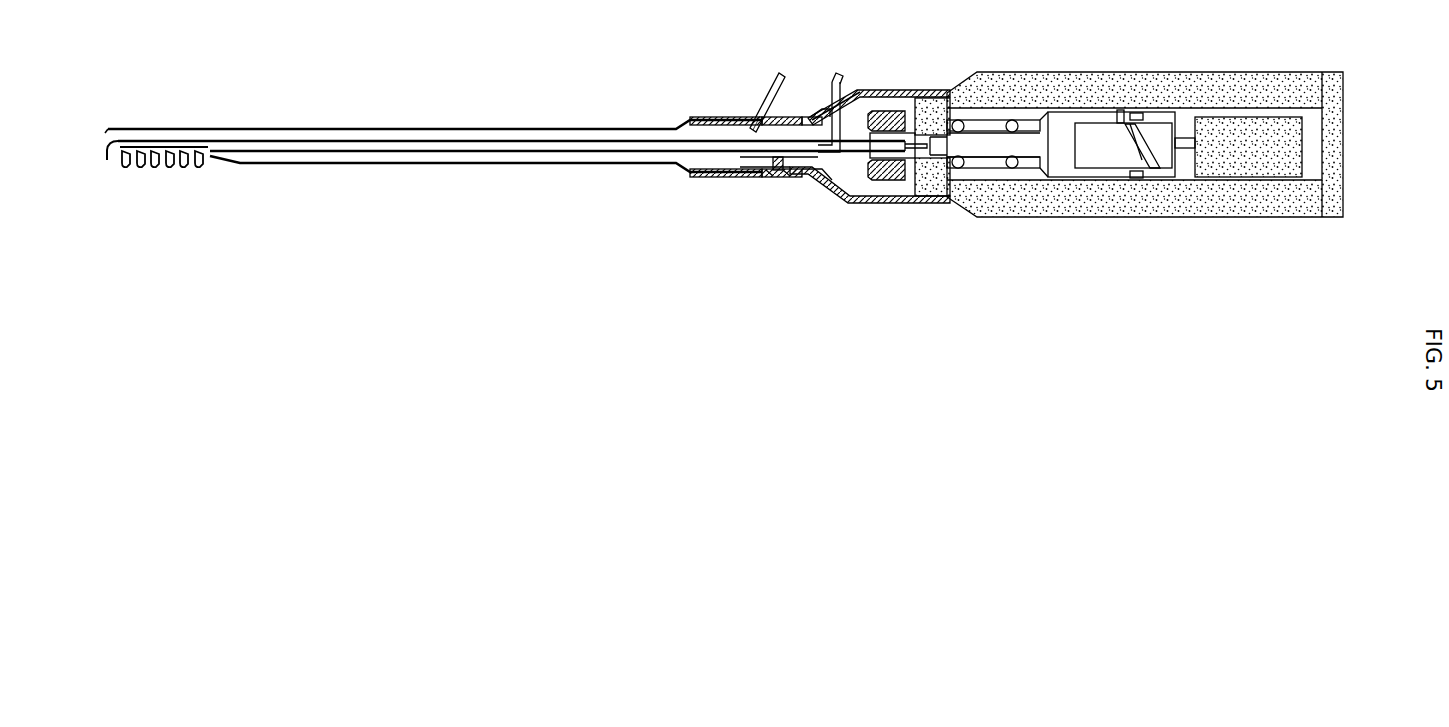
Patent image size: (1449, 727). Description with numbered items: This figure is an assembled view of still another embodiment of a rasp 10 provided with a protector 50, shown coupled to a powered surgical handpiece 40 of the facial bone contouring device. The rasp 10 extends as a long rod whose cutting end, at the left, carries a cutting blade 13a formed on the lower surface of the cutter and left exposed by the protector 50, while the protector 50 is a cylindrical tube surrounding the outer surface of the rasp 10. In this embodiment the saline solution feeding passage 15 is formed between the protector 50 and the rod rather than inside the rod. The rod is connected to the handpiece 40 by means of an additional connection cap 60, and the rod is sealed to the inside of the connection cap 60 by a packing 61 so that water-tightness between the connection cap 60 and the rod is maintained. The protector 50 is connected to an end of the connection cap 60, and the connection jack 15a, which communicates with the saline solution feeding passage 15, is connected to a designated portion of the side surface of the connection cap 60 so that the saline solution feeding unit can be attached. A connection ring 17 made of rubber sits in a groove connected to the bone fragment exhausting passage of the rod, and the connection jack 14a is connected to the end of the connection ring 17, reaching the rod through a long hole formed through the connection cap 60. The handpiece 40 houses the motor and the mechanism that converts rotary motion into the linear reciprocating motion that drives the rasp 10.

The rasp 10 is at (391, 139).
The protector 50 is at (561, 127).
The cutting blade 13a is at (205, 175).
The saline solution feeding passage 15 is at (635, 138).
The external connection jack 15a is at (761, 87).
The external connection jack 14a is at (842, 72).
The connection ring 17 is at (862, 94).
The connection cap 60 is at (821, 194).
The packing 61 is at (772, 162).
The powered surgical handpiece 40 is at (1102, 46).